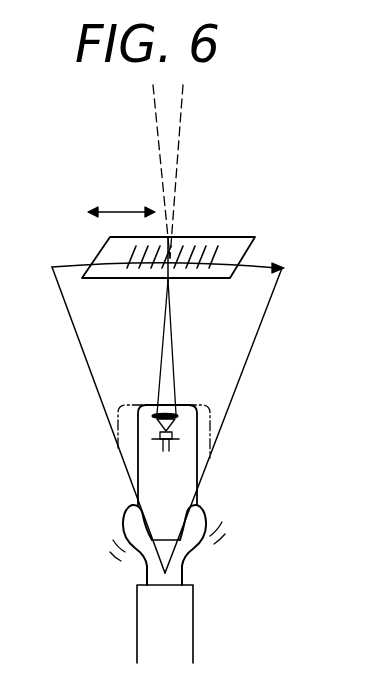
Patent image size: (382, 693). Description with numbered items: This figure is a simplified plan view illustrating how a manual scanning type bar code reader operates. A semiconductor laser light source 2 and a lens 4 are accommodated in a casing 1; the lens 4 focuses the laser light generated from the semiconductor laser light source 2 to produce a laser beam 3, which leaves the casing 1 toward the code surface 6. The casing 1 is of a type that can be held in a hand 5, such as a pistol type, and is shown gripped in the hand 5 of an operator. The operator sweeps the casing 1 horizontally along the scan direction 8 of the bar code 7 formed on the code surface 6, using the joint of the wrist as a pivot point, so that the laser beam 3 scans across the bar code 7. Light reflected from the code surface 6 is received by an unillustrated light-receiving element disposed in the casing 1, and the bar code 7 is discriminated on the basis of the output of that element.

The casing 1 is at (152, 480).
The semiconductor laser light source 2 is at (176, 443).
The laser beam 3 is at (167, 346).
The lens 4 is at (185, 402).
The hand 5 is at (176, 634).
The code surface 6 is at (240, 238).
The bar code 7 is at (218, 233).
The scan direction 8 is at (122, 211).